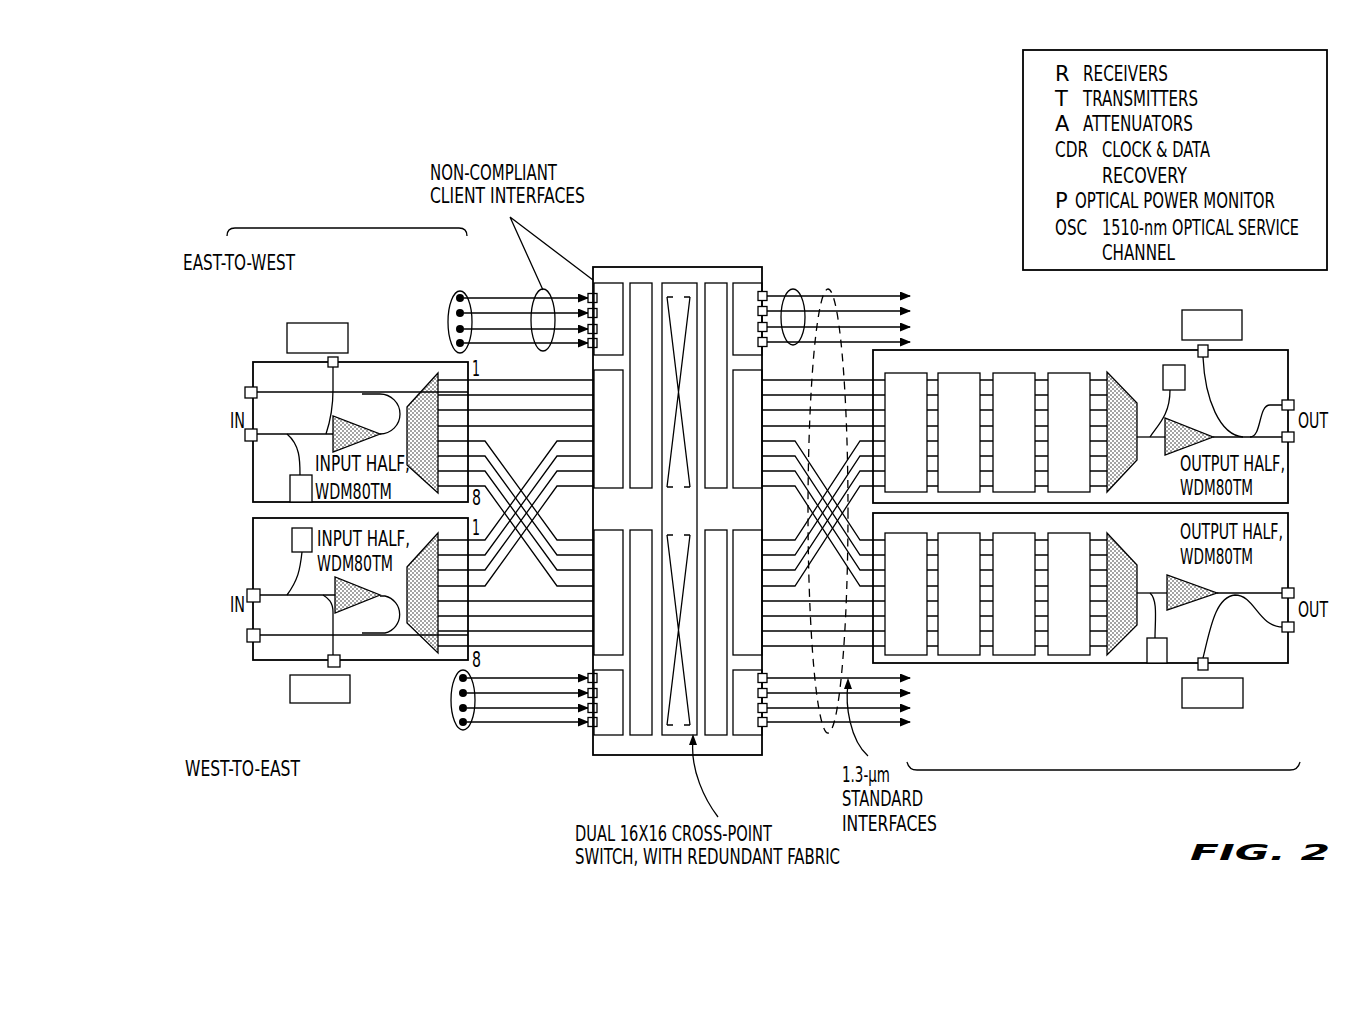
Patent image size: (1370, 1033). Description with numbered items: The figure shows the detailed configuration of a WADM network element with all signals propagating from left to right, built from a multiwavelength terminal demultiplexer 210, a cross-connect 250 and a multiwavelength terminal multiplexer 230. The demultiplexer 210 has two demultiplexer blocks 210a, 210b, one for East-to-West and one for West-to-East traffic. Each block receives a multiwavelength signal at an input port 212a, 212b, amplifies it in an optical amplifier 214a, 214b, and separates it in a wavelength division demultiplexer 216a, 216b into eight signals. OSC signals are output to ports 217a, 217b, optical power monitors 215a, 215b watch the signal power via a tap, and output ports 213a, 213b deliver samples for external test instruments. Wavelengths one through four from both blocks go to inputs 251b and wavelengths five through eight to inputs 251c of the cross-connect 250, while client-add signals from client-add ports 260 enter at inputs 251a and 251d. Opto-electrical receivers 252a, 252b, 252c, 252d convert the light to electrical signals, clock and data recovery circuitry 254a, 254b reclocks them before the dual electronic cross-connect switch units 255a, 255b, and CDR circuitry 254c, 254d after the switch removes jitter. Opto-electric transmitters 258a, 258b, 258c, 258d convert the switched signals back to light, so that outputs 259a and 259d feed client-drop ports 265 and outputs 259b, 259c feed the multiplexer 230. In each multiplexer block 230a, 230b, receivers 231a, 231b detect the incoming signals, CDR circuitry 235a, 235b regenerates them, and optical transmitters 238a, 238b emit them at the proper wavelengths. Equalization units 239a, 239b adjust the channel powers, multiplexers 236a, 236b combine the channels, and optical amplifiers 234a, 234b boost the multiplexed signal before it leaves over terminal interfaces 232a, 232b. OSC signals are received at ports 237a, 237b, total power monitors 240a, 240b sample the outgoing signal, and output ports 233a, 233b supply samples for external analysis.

The multiwavelength terminal demultiplexer 210 is at (348, 228).
The demultiplexer block 210a is at (267, 365).
The demultiplexer block 210b is at (277, 653).
The input port 212a is at (245, 436).
The input port 212b is at (247, 592).
The output port 213a is at (245, 393).
The output port 213b is at (247, 632).
The optical amplifier 214a is at (350, 427).
The optical amplifier 214b is at (367, 597).
The optical power monitor 215a is at (290, 483).
The optical power monitor 215b is at (292, 544).
The wavelength division demultiplexer 216a is at (418, 400).
The wavelength division demultiplexer 216b is at (425, 638).
The OSC port 217a is at (336, 358).
The OSC port 217b is at (340, 667).
The multiwavelength terminal multiplexer 230 is at (1110, 770).
The multiplexer block 230a is at (1020, 350).
The multiplexer block 230b is at (1033, 663).
The receiver 231a is at (925, 403).
The receiver 231b is at (925, 563).
The terminal interface 232a is at (1295, 440).
The terminal interface 232b is at (1297, 592).
The output port 233a is at (1295, 405).
The output port 233b is at (1297, 627).
The optical amplifier 234a is at (1168, 454).
The optical amplifier 234b is at (1167, 580).
The CDR circuitry 235a is at (978, 403).
The CDR circuitry 235b is at (978, 563).
The multiplexer 236a is at (1117, 379).
The multiplexer 236b is at (1120, 543).
The OSC port 237a is at (1198, 349).
The OSC port 237b is at (1198, 672).
The optical transmitter 238a is at (1033, 403).
The optical transmitter 238b is at (1033, 563).
The equalization unit 239a is at (1088, 403).
The equalization unit 239b is at (1088, 563).
The total power monitor 240a is at (1185, 387).
The total power monitor 240b is at (1167, 647).
The cross-connect 250 is at (760, 267).
The inputs 251a is at (530, 309).
The inputs 251b is at (594, 484).
The inputs 251c is at (597, 540).
The inputs 251d is at (594, 676).
The opto-electrical receiver 252a is at (600, 285).
The opto-electrical receiver 252b is at (597, 378).
The opto-electrical receiver 252c is at (594, 600).
The opto-electrical receiver 252d is at (594, 748).
The CDR circuitry 254a is at (637, 293).
The CDR circuitry 254b is at (642, 728).
The CDR circuitry 254c is at (715, 293).
The CDR circuitry 254d is at (718, 728).
The switch unit 255a is at (678, 293).
The switch unit 255b is at (680, 728).
The opto-electric transmitter 258a is at (765, 292).
The opto-electric transmitter 258b is at (763, 381).
The opto-electric transmitter 258c is at (755, 594).
The opto-electric transmitter 258d is at (757, 728).
The outputs 259a is at (765, 296).
The outputs 259b is at (763, 487).
The outputs 259c is at (763, 540).
The outputs 259d is at (765, 678).
The client-add ports 260 is at (463, 290).
The client-drop ports 265 is at (957, 506).